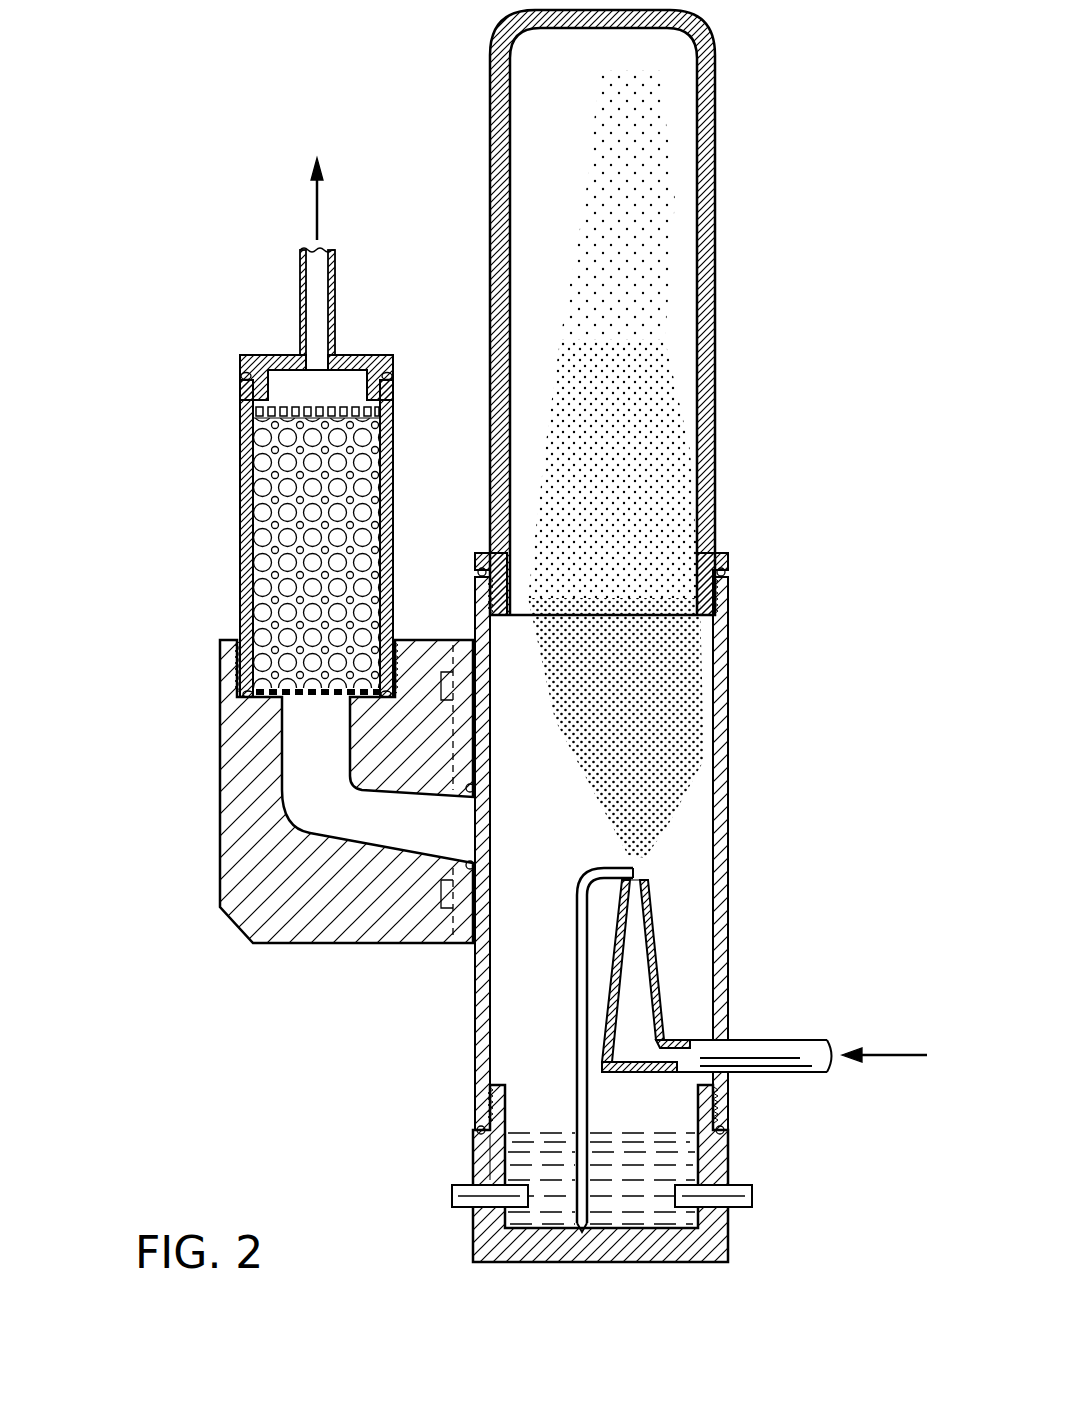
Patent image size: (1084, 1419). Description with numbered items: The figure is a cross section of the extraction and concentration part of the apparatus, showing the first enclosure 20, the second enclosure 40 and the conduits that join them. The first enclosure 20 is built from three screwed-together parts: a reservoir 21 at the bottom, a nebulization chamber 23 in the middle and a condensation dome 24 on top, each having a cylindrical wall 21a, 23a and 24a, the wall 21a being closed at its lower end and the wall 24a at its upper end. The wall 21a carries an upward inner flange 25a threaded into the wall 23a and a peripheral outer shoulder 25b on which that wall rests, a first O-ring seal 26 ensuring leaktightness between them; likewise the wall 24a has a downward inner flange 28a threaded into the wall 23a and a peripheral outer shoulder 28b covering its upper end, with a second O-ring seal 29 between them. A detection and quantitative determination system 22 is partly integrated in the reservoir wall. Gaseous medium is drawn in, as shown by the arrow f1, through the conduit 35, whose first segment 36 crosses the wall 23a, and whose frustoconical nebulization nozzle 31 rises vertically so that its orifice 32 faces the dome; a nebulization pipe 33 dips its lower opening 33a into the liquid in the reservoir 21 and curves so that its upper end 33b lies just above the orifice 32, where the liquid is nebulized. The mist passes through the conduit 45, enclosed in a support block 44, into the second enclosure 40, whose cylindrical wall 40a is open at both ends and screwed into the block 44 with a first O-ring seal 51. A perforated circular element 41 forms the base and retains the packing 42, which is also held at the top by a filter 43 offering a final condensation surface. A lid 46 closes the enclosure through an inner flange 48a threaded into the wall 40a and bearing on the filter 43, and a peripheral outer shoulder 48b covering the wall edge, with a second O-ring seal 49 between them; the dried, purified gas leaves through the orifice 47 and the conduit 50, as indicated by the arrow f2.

The first enclosure 20 is at (770, 372).
The reservoir 21 is at (742, 1142).
The cylindrical wall of the reservoir 21a is at (740, 1182).
The detection and quantitative determination system 22 is at (455, 1207).
The nebulization chamber 23 is at (740, 703).
The cylindrical wall of the nebulization chamber 23a is at (728, 795).
The condensation dome 24 is at (722, 97).
The cylindrical wall of the condensation dome 24a is at (716, 217).
The inner flange 25a is at (490, 1086).
The peripheral outer shoulder 25b is at (470, 1152).
The first O-ring seal 26 is at (477, 1130).
The inner flange 28a is at (716, 633).
The peripheral outer shoulder 28b is at (730, 552).
The second O-ring seal 29 is at (730, 573).
The nebulization nozzle 31 is at (660, 955).
The orifice 32 is at (646, 885).
The nebulization pipe 33 is at (576, 1058).
The opening 33a is at (585, 1233).
The opening 33b is at (648, 870).
The conduit 35 is at (757, 965).
The first segment 36 is at (754, 1024).
The second enclosure 40 is at (303, 441).
The cylindrical wall of the second enclosure 40a is at (240, 583).
The circular element 41 is at (300, 735).
The packing 42 is at (345, 598).
The filter 43 is at (256, 408).
The support block 44 is at (275, 912).
The conduit 45 is at (320, 832).
The lid 46 is at (267, 355).
The orifice 47 is at (318, 368).
The inner flange 48a is at (393, 410).
The peripheral outer shoulder 48b is at (393, 365).
The second O-ring seal 49 is at (242, 376).
The conduit 50 is at (300, 262).
The first O-ring seal 51 is at (250, 693).
The arrow f1 is at (900, 1057).
The arrow f2 is at (320, 210).